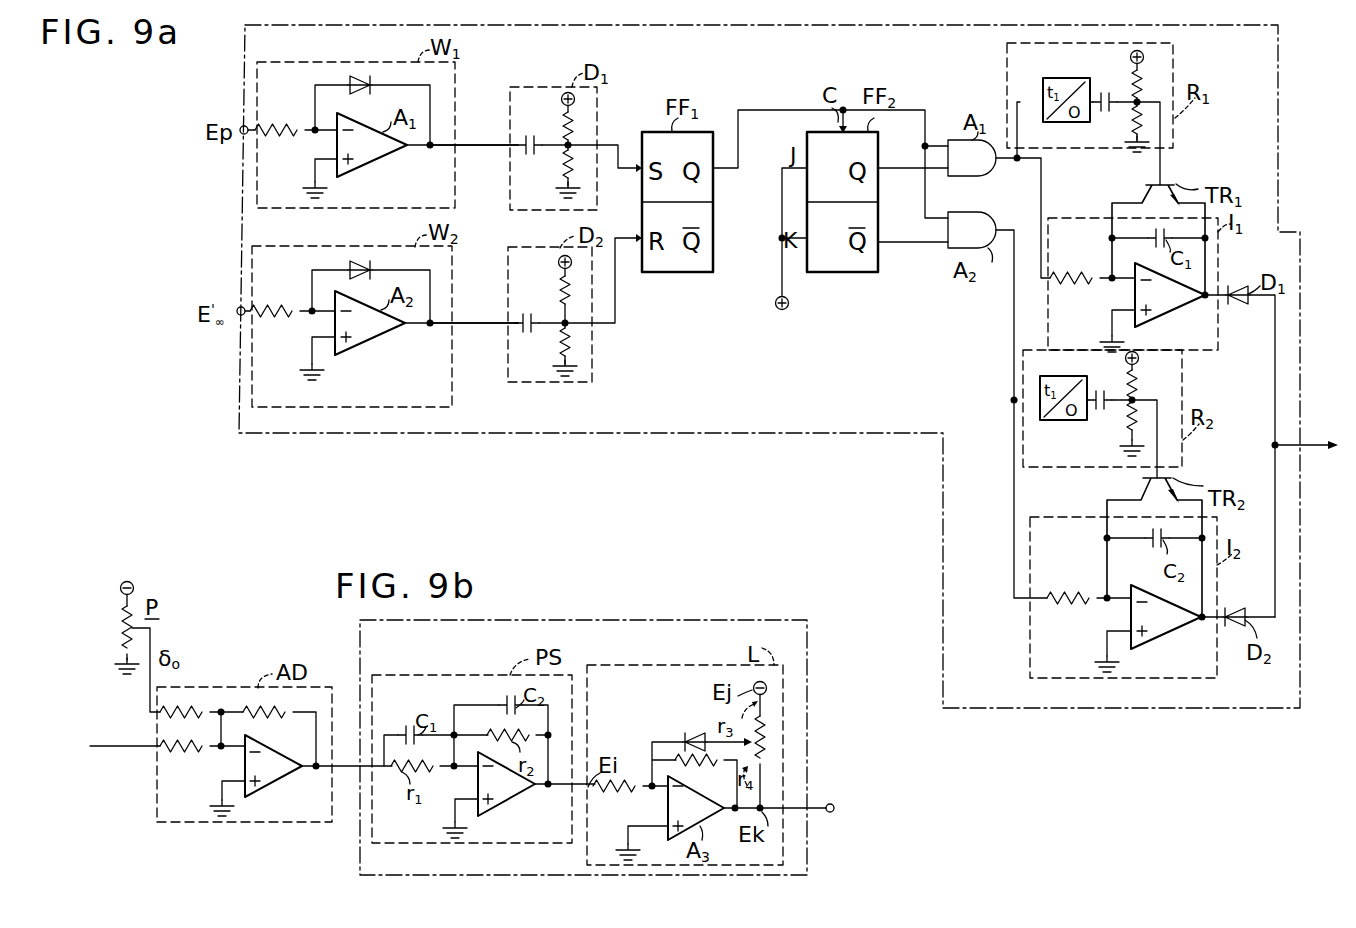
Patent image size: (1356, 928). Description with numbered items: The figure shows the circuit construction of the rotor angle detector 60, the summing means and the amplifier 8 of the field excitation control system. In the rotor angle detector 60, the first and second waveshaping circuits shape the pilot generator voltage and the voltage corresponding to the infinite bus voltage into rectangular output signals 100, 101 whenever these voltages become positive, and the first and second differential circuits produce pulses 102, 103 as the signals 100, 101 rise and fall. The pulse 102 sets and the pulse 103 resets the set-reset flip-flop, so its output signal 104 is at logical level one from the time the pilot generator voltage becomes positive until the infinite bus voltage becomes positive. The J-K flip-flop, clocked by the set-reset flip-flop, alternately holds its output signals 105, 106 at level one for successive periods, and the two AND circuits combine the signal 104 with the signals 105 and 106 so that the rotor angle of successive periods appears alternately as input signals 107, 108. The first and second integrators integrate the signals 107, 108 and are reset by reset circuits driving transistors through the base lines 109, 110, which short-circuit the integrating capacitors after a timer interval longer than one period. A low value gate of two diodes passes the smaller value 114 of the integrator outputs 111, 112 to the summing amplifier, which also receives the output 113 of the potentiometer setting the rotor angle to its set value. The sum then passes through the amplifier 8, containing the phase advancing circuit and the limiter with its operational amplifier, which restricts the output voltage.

In FIG. 9a, the rotor angle detector 60 is at (1300, 270).
In FIG. 9a, the output signal of waveshaping circuit W1 100 is at (492, 141).
In FIG. 9a, the output signal of waveshaping circuit W2 101 is at (498, 328).
In FIG. 9a, the pulse from differential circuit D1 102 is at (620, 134).
In FIG. 9a, the pulse from differential circuit D2 103 is at (635, 297).
In FIG. 9a, the output signal of flip-flop FF1 104 is at (748, 155).
In FIG. 9a, the Q output signal of flip-flop FF2 105 is at (906, 160).
In FIG. 9a, the Q-bar output signal of flip-flop FF2 106 is at (920, 243).
In FIG. 9a, the input signal to integrator I1 107 is at (1021, 217).
In FIG. 9a, the input signal to integrator I2 108 is at (1012, 312).
In FIG. 9a, the base line of transistor TR1 109 is at (1160, 168).
In FIG. 9a, the base line of transistor TR2 110 is at (1157, 450).
In FIG. 9a, the output of integrator I1 111 is at (1240, 271).
In FIG. 9a, the output of integrator I2 112 is at (1212, 617).
In FIG. 9b, the output of potentiometer P 113 is at (150, 630).
In FIG. 9a, the rotor angle signal 114 is at (1272, 445).
In FIG. 9b, the rotor angle signal 114 is at (128, 748).
In FIG. 9b, the amplifier 8 is at (720, 622).